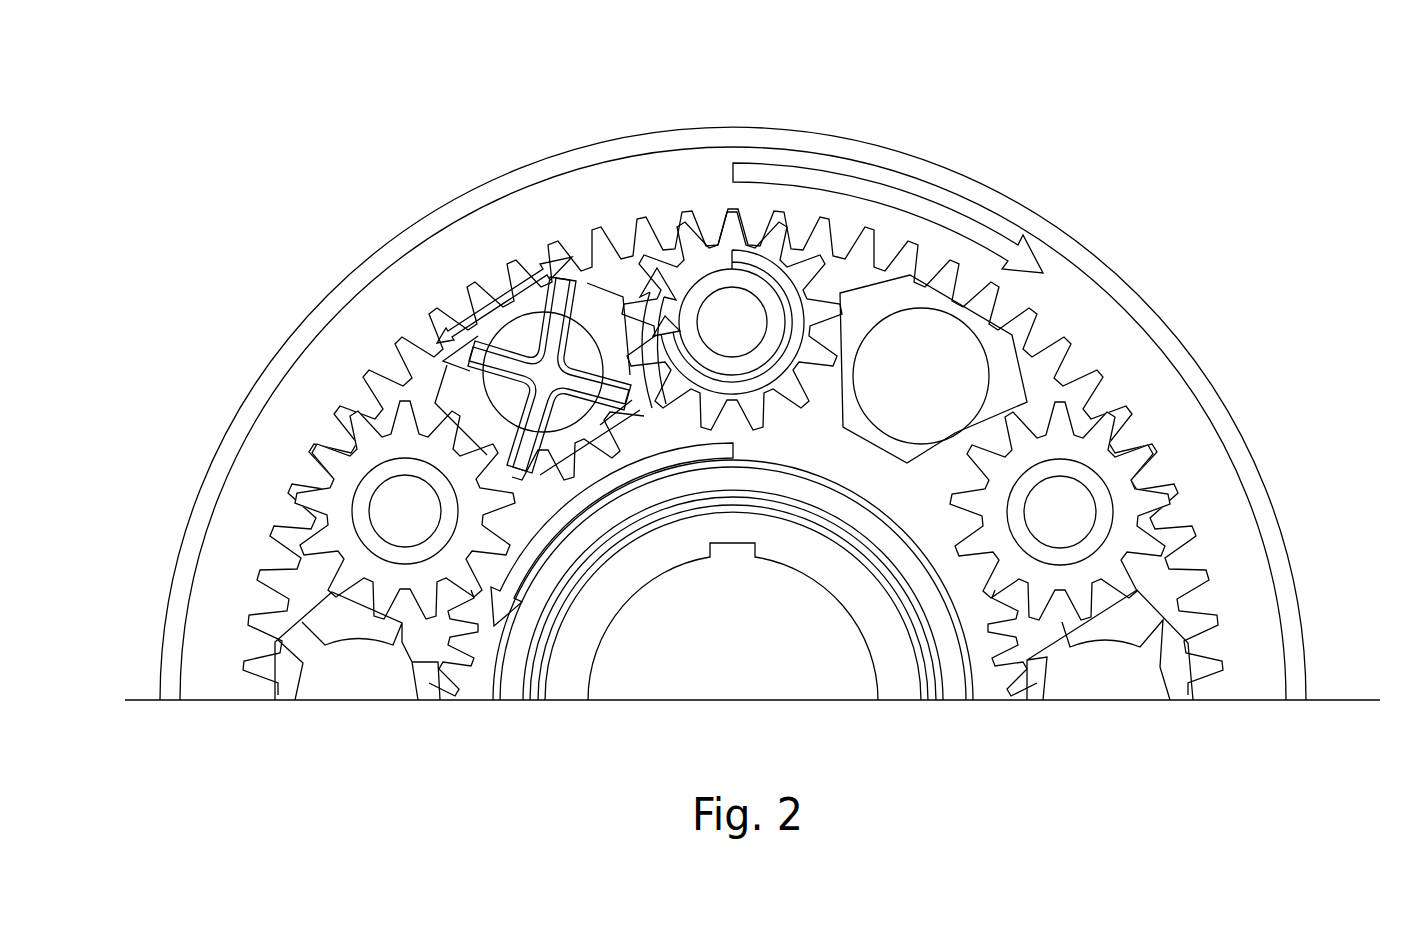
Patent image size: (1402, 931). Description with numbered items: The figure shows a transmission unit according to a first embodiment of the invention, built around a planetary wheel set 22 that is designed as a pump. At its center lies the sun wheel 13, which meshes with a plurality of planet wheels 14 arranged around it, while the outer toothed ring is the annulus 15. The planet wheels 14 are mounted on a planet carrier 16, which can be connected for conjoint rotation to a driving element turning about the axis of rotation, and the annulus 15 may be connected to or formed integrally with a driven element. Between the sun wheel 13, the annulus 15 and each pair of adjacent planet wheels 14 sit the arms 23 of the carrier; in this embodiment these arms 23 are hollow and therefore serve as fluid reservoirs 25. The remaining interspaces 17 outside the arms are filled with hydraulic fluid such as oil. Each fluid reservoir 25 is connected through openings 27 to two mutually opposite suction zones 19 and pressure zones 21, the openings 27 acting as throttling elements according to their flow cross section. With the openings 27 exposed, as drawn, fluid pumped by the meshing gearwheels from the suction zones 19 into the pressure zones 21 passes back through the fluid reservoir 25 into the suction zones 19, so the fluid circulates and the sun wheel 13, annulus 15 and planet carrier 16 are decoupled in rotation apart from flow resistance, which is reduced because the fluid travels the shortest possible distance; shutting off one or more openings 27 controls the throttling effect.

The sun wheel 13 is at (565, 680).
The planet wheels 14 is at (684, 214).
The annulus 15 is at (1210, 490).
The planet carrier 16 is at (395, 505).
The interspaces 17 is at (272, 560).
The suction zones 19 is at (778, 232).
The pressure zones 21 is at (600, 232).
The planetary wheel set 22 is at (262, 141).
The arms 23 is at (985, 395).
The fluid reservoirs 25 is at (530, 330).
The openings 27 is at (945, 423).